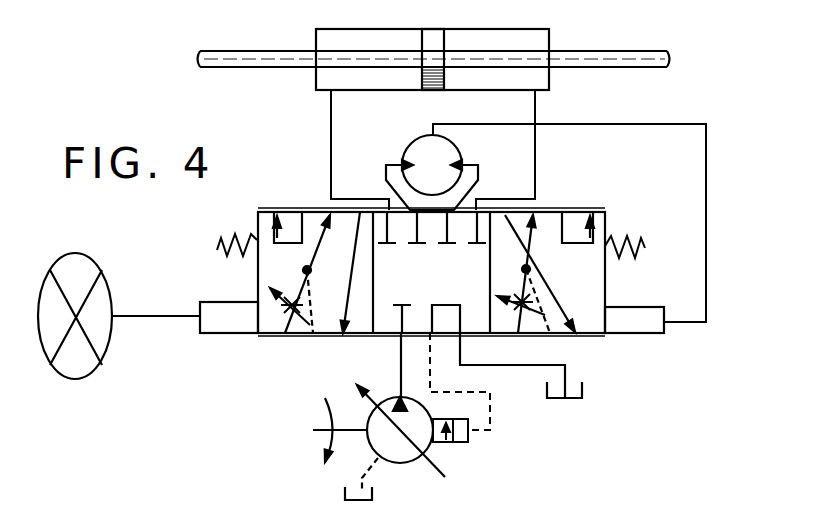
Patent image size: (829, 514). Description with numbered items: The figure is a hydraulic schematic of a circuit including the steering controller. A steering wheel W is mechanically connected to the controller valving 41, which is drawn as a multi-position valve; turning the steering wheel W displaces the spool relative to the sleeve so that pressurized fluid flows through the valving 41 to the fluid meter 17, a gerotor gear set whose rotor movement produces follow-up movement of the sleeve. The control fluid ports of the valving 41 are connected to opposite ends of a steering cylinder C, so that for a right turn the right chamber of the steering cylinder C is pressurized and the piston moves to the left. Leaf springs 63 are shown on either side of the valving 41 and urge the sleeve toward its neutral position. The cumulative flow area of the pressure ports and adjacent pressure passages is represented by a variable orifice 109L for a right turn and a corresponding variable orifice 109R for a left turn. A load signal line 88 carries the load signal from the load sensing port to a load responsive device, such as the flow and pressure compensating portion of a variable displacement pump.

The steering cylinder C is at (369, 29).
The fluid meter 17 is at (406, 135).
The controller valving 41 is at (614, 223).
The leaf springs 63 is at (218, 250).
The variable orifice 109R is at (297, 331).
The variable orifice 109L is at (533, 330).
The load signal line 88 is at (492, 410).
The steering wheel W is at (98, 261).